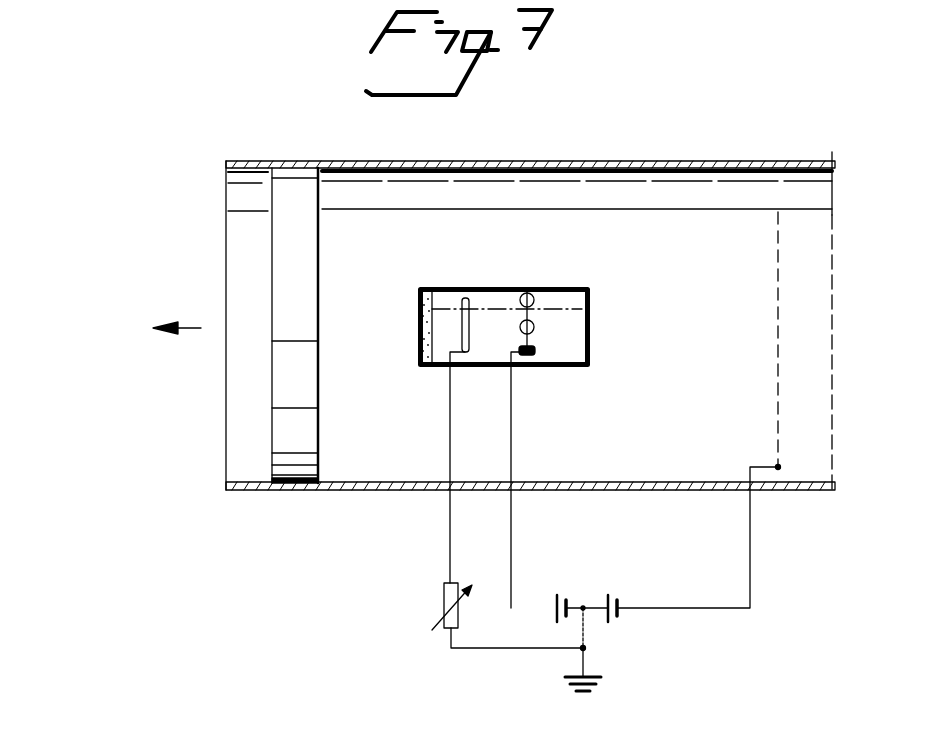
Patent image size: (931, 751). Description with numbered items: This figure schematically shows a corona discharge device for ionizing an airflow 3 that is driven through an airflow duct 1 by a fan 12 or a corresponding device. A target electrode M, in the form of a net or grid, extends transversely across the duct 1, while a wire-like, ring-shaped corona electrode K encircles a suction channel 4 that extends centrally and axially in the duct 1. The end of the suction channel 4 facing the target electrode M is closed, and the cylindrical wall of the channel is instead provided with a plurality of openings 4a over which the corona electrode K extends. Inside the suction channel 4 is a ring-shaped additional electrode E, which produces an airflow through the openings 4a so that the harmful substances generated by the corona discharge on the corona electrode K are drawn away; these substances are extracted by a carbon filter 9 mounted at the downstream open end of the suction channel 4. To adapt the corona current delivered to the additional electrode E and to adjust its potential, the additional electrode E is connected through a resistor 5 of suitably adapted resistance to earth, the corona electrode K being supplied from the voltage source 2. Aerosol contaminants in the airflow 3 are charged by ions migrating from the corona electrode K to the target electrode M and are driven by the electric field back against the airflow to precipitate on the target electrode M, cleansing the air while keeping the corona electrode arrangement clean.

The airflow duct 1 is at (441, 162).
The voltage source 2 is at (605, 594).
The airflow 3 is at (184, 327).
The suction channel 4 is at (571, 290).
The openings 4a is at (535, 334).
The resistor 5 is at (444, 600).
The carbon filter 9 is at (418, 303).
The fan 12 is at (281, 490).
The additional electrode E is at (465, 297).
The corona electrode K is at (528, 292).
The target electrode M is at (778, 310).